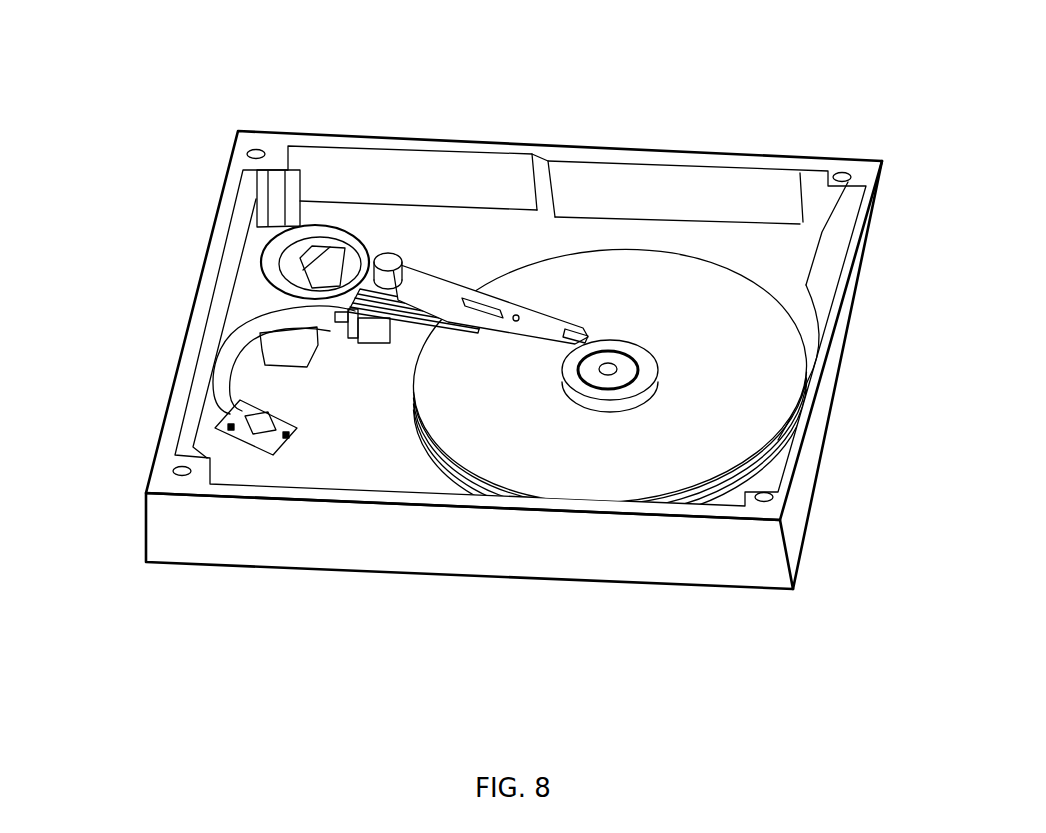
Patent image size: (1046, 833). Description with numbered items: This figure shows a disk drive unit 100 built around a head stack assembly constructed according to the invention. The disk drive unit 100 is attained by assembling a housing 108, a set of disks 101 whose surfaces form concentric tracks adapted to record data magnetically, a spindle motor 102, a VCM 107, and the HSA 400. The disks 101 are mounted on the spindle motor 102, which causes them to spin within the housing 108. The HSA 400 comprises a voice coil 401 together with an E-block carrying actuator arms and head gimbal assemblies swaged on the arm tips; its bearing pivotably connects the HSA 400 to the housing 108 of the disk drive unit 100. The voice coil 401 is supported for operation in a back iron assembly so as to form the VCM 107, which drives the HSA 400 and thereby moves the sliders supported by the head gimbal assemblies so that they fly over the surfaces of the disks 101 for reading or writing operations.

The disk drive unit 100 is at (344, 32).
The disks 101 is at (655, 313).
The spindle motor 102 is at (628, 367).
The VCM 107 is at (285, 350).
The housing 108 is at (445, 540).
The HSA 400 is at (432, 292).
The voice coil 401 is at (278, 242).